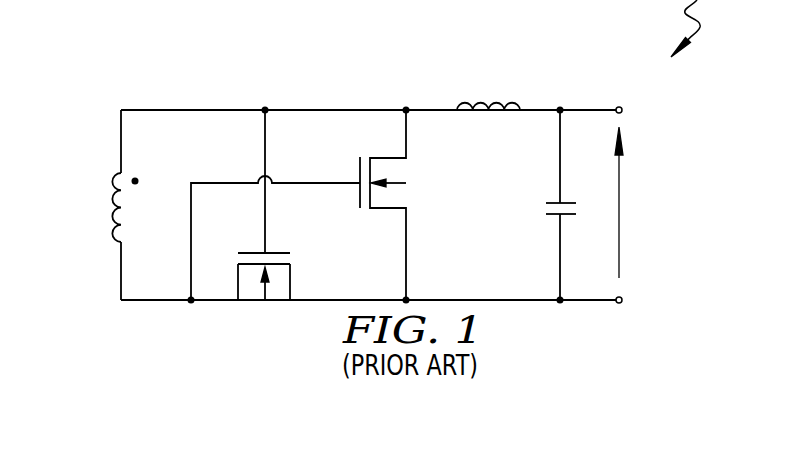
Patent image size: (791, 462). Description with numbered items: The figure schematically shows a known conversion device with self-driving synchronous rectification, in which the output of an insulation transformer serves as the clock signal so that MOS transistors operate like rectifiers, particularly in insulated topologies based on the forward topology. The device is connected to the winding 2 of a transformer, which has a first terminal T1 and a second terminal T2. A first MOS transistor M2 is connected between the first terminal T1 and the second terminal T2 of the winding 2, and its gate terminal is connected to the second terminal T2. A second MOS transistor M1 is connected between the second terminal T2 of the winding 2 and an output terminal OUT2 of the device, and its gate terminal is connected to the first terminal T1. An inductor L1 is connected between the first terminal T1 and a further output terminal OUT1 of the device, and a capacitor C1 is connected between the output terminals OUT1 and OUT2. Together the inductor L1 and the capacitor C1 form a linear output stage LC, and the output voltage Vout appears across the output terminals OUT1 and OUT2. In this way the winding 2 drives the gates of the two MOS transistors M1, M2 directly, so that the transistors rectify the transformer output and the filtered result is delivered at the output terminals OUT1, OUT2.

The winding 2 is at (93, 153).
The first terminal T1 is at (264, 110).
The second terminal T2 is at (190, 301).
The second MOS transistor M1 is at (264, 295).
The first MOS transistor M2 is at (401, 205).
The inductor L1 is at (488, 90).
The capacitor C1 is at (573, 205).
The further output terminal OUT1 is at (647, 110).
The output terminal OUT2 is at (648, 300).
The output voltage Vout is at (644, 202).